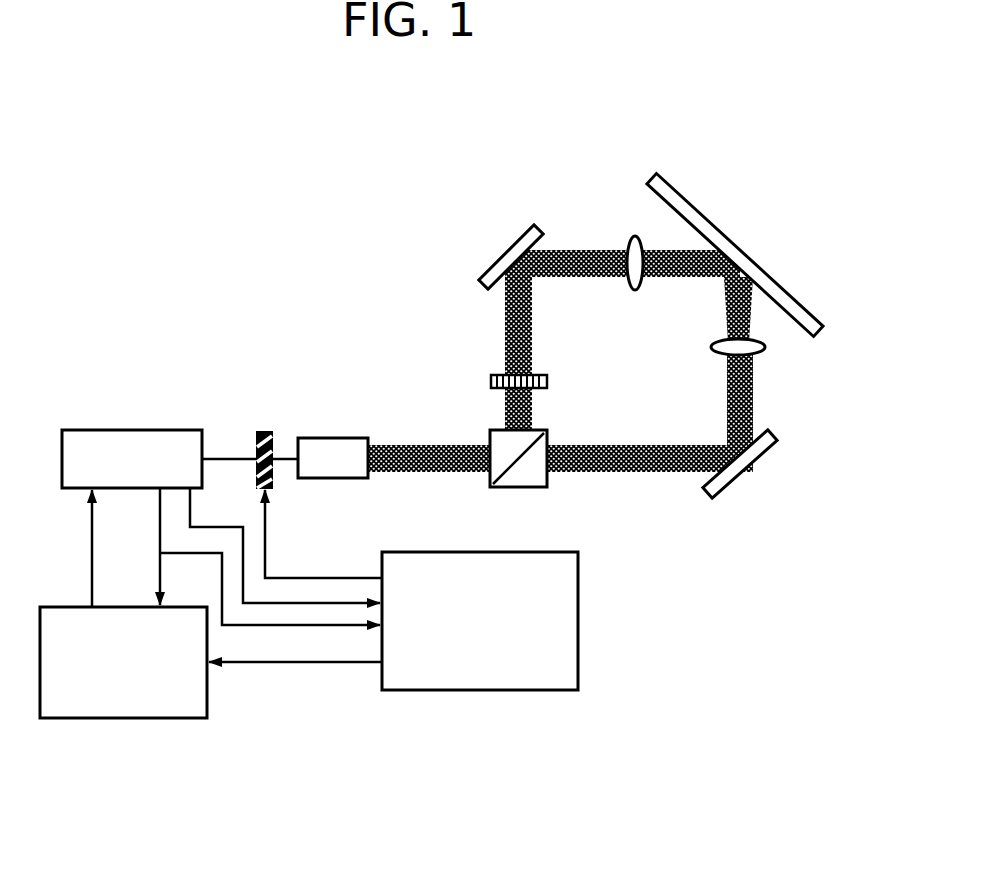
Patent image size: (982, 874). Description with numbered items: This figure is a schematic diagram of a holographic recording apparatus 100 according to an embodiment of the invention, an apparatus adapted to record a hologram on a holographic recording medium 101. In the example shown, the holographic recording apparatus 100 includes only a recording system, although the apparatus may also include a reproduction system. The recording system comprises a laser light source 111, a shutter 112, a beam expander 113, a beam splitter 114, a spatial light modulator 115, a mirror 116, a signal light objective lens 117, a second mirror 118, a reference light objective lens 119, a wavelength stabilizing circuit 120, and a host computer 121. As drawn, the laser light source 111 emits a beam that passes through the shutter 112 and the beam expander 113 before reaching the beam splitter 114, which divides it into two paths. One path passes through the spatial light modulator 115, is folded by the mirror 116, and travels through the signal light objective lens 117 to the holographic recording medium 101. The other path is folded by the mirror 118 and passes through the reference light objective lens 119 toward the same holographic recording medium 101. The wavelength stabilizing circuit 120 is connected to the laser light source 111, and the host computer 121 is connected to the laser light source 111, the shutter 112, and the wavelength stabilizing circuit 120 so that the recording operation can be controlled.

The holographic recording apparatus 100 is at (397, 205).
The holographic recording medium 101 is at (696, 202).
The laser light source 111 is at (168, 430).
The shutter 112 is at (263, 432).
The beam expander 113 is at (331, 438).
The beam splitter 114 is at (540, 487).
The spatial light modulator 115 is at (490, 381).
The mirror 116 is at (484, 260).
The signal light objective lens 117 is at (631, 236).
The mirror 118 is at (768, 452).
The reference light objective lens 119 is at (765, 355).
The wavelength stabilizing circuit 120 is at (185, 718).
The host computer 121 is at (579, 576).